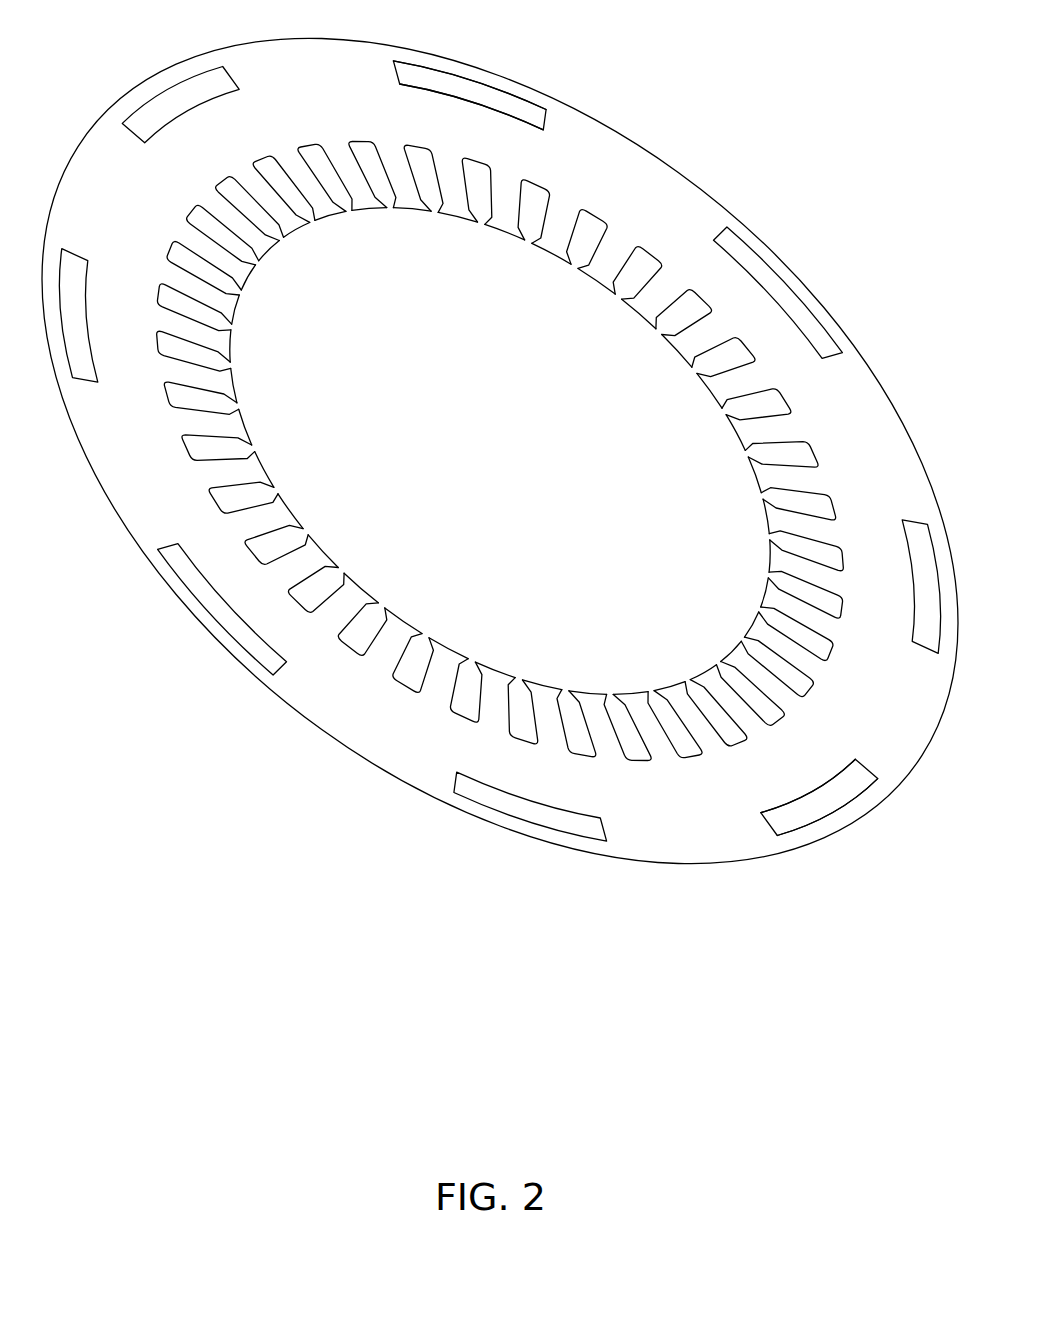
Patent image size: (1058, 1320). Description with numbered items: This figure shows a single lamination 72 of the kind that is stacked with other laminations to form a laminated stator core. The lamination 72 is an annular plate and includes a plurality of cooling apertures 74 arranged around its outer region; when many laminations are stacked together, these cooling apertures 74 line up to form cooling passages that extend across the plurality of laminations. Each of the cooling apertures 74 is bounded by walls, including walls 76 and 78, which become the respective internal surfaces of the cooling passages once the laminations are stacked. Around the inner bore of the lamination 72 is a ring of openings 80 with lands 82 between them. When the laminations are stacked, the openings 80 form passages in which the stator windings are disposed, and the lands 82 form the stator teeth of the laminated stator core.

The lamination 72 is at (471, 814).
The cooling apertures 74 is at (466, 92).
The wall 76 is at (443, 93).
The wall 78 is at (500, 96).
The openings 80 is at (678, 318).
The lands 82 is at (652, 296).